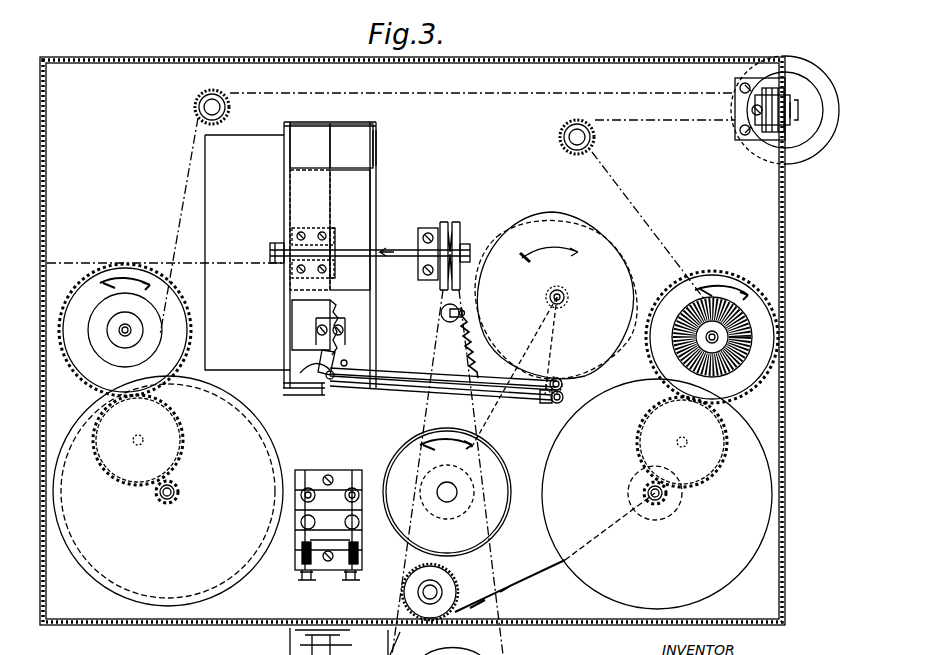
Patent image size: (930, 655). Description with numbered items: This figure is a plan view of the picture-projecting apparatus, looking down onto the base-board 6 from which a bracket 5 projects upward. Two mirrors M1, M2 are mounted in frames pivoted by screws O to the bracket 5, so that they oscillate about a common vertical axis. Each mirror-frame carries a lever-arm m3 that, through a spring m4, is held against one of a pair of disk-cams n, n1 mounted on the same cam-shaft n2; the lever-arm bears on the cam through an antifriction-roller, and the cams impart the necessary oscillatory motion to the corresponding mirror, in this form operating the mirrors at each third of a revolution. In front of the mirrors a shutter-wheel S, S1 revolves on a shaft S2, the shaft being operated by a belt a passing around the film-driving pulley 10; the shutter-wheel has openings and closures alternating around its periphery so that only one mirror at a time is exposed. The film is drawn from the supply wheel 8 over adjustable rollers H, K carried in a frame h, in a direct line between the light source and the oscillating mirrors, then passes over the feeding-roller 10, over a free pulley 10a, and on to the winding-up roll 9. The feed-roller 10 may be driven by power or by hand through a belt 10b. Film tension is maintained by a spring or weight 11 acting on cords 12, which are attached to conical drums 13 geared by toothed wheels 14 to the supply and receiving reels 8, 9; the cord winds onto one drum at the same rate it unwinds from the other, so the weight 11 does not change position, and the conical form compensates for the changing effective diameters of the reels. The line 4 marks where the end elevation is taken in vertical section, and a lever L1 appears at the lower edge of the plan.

The base-board 6 is at (412, 341).
The cords 12 is at (645, 205).
The weight 11 is at (785, 110).
The shutter-wheel S is at (350, 406).
The shutter-wheel S1 is at (319, 270).
The shaft S2 is at (366, 258).
The bracket 5 is at (318, 330).
The pivot screws O is at (336, 370).
The mirror M2 is at (300, 372).
The mirror M1 is at (372, 380).
The lever-arm m3 is at (432, 370).
The spring m4 is at (466, 350).
The disk-cam n is at (554, 316).
The cam-shaft n2 is at (562, 292).
The disk-cam n1 is at (612, 345).
The toothed wheels 14 is at (722, 275).
The conical drums 13 is at (738, 300).
The section line 4 is at (58, 256).
The supply reel 8 is at (168, 491).
The winding-up roll 9 is at (657, 494).
The adjustable roller H is at (296, 500).
The adjustable roller K is at (355, 494).
The frame h is at (330, 537).
The feeding-roller 10 is at (447, 492).
The free pulley 10a is at (402, 592).
The belt a is at (385, 472).
The lever L1 is at (405, 640).
The belt 10b is at (500, 645).